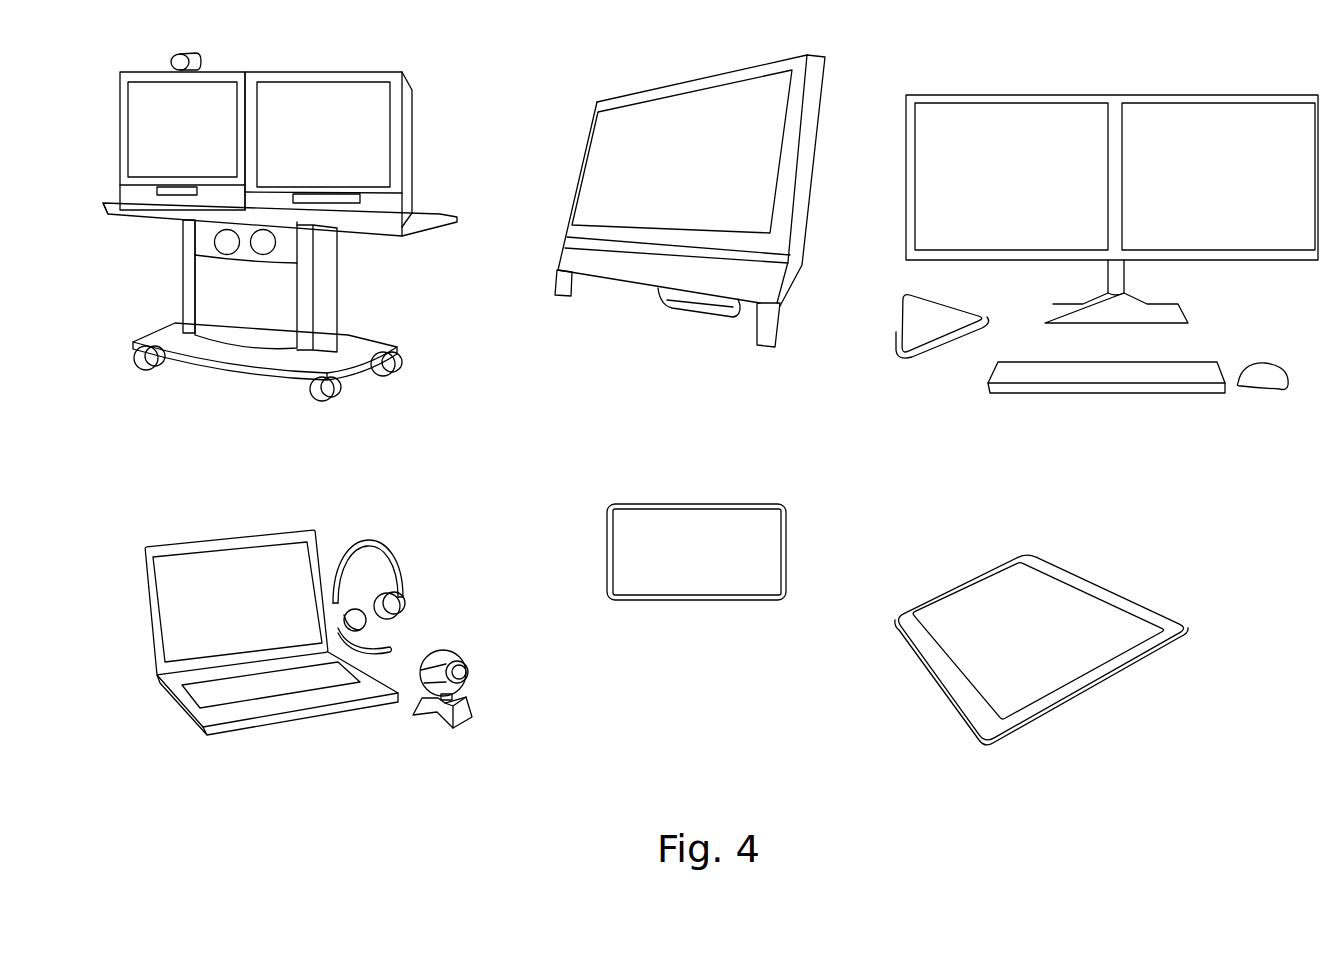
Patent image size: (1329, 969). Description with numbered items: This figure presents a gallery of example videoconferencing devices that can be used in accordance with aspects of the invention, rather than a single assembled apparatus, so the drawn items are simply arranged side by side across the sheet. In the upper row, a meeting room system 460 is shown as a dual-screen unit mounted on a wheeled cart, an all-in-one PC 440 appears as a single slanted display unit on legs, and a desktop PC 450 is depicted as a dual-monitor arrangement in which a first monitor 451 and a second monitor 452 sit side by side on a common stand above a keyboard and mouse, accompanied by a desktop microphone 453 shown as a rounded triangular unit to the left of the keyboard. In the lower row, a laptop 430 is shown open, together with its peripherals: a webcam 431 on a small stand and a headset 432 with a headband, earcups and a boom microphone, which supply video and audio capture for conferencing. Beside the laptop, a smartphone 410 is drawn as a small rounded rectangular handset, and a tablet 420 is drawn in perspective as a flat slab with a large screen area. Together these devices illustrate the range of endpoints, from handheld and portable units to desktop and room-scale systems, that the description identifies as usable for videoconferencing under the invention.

The smartphone 410 is at (696, 578).
The tablet 420 is at (1041, 676).
The laptop 430 is at (271, 660).
The webcam 431 is at (442, 710).
The headset 432 is at (403, 597).
The all-in-one PC 440 is at (690, 215).
The desktop PC 450 is at (1107, 272).
The first monitor 451 is at (1011, 198).
The second monitor 452 is at (1218, 198).
The desktop microphone 453 is at (942, 350).
The meeting room system 460 is at (280, 243).